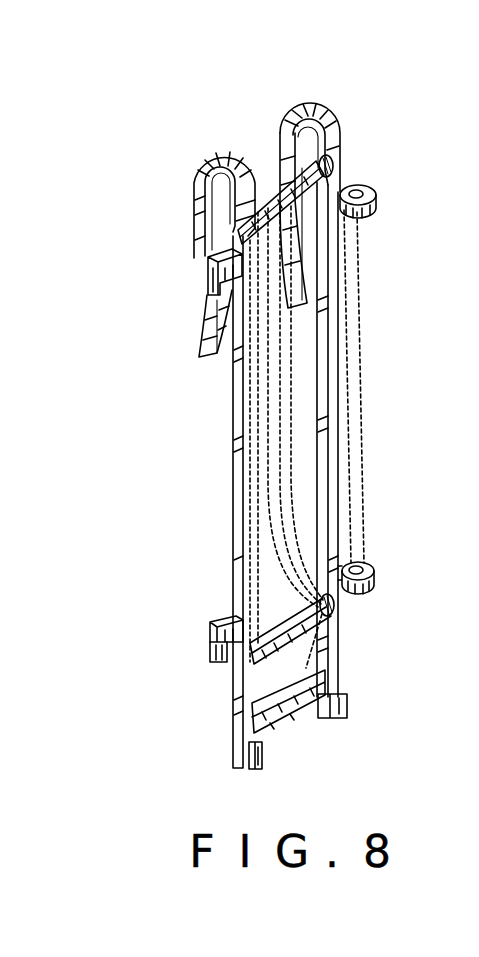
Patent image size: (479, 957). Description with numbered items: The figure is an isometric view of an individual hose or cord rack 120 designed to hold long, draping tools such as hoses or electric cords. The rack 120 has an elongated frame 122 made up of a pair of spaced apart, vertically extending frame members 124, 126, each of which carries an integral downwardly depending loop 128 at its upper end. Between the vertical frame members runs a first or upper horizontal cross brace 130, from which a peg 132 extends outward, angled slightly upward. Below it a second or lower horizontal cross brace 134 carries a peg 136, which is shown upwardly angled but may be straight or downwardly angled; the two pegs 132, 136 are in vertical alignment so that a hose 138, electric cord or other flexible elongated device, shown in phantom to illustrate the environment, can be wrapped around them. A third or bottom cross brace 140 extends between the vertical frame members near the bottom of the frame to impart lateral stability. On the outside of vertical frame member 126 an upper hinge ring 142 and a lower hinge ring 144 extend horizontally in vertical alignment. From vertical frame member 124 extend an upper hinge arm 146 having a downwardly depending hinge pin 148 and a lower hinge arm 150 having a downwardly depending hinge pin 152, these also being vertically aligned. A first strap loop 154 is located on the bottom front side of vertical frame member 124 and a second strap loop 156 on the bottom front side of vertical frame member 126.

The rack 120 is at (367, 163).
The elongated frame 122 is at (233, 448).
The vertical frame member 124 is at (233, 500).
The vertical frame member 126 is at (337, 467).
The downwardly depending loop 128 is at (218, 153).
The upper horizontal cross brace 130 is at (271, 188).
The peg 132 is at (337, 156).
The lower horizontal cross brace 134 is at (262, 686).
The peg 136 is at (334, 603).
The hose 138 is at (363, 398).
The bottom cross brace 140 is at (303, 700).
The upper hinge ring 142 is at (377, 207).
The lower hinge ring 144 is at (375, 582).
The upper hinge arm 146 is at (207, 221).
The hinge pin 148 is at (210, 285).
The lower hinge arm 150 is at (220, 620).
The hinge pin 152 is at (212, 655).
The first strap loop 154 is at (272, 770).
The second strap loop 156 is at (347, 705).